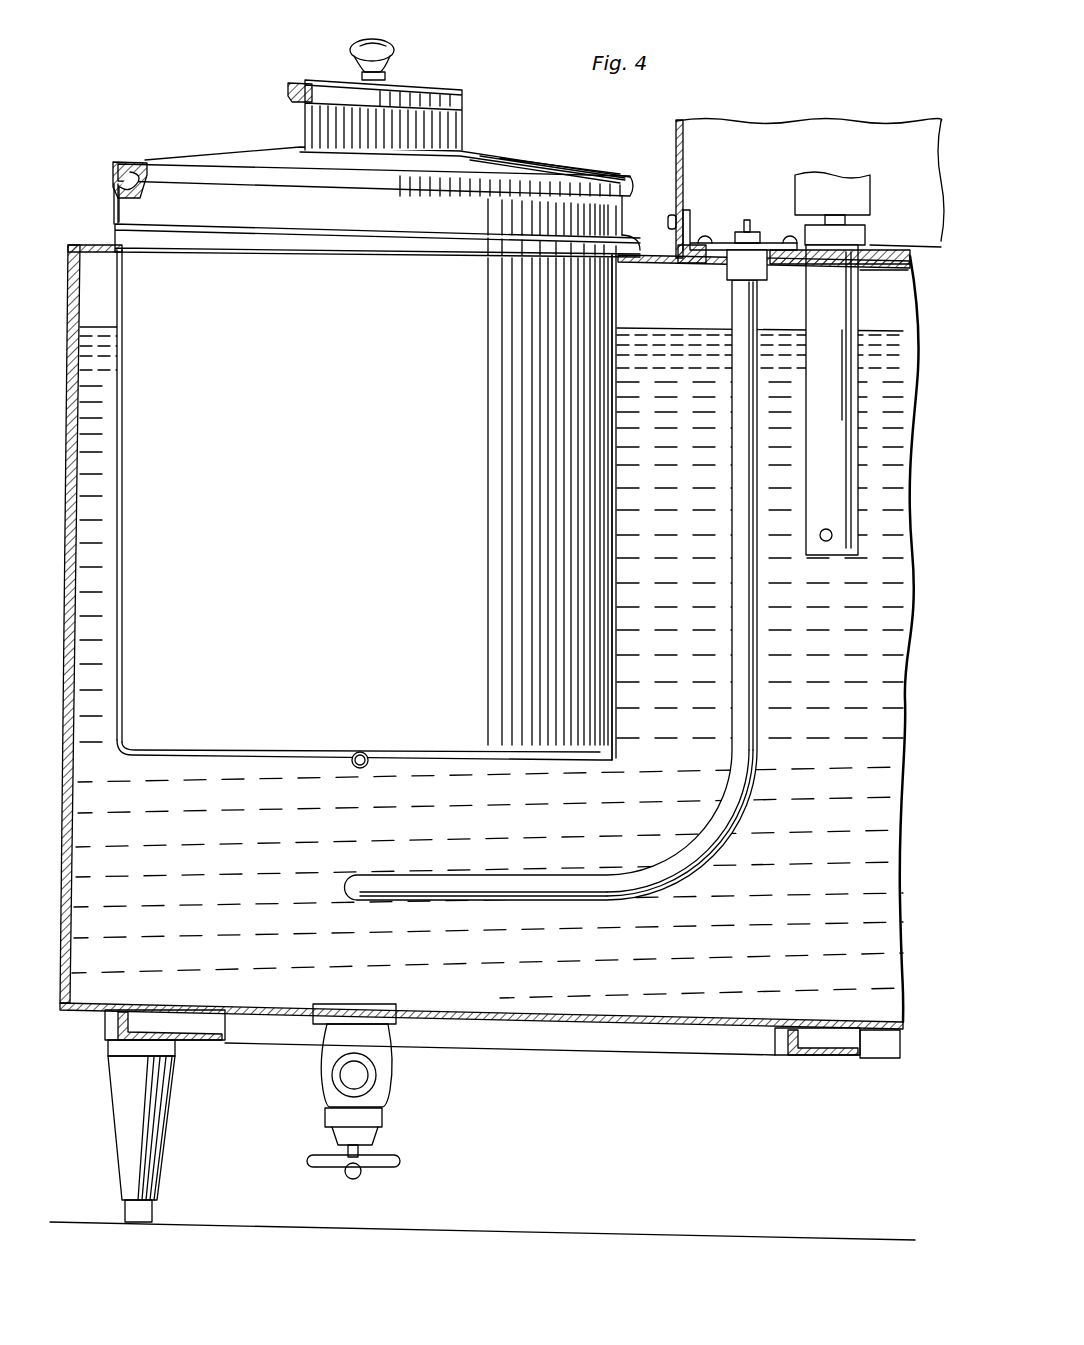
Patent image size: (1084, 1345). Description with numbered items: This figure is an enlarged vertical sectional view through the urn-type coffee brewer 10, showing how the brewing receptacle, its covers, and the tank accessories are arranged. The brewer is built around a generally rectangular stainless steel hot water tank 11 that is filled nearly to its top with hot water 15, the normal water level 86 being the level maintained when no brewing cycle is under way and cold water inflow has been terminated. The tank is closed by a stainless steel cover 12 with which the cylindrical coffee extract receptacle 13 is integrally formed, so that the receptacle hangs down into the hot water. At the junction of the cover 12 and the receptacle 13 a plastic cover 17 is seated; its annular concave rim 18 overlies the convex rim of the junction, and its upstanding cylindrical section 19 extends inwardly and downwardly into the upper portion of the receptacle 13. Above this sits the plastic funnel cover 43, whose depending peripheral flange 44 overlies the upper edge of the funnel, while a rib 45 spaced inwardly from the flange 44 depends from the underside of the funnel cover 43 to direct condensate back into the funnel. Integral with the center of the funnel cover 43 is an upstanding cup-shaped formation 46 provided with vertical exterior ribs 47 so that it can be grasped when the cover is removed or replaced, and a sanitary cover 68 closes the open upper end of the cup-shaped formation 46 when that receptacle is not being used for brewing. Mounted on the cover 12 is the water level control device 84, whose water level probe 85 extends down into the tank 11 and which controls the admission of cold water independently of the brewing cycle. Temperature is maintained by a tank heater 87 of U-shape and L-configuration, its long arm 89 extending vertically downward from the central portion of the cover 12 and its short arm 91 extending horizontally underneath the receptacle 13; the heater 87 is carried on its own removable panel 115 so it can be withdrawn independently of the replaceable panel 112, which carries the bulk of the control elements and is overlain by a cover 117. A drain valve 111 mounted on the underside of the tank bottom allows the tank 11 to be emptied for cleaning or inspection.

The urn-type coffee brewer 10 is at (136, 86).
The hot water tank 11 is at (90, 1012).
The cover 12 is at (90, 243).
The coffee extract receptacle 13 is at (118, 574).
The hot water 15 is at (111, 401).
The plastic cover 17 is at (626, 209).
The annular concave rim 18 is at (258, 237).
The upstanding cylindrical section 19 is at (113, 201).
The plastic funnel cover 43 is at (533, 156).
The depending peripheral flange 44 is at (116, 172).
The rib 45 is at (132, 165).
The cup-shaped formation 46 is at (290, 106).
The vertical exterior ribs 47 is at (462, 126).
The sanitary cover 68 is at (412, 86).
The water level control device 84 is at (812, 180).
The water level probe 85 is at (856, 440).
The normal water level 86 is at (638, 328).
The tank heater 87 is at (762, 671).
The long arm 89 is at (757, 638).
The short arm 91 is at (512, 884).
The drain valve 111 is at (392, 1078).
The replaceable panel 112 is at (692, 236).
The removable panel 115 is at (722, 242).
The cover 117 is at (676, 130).